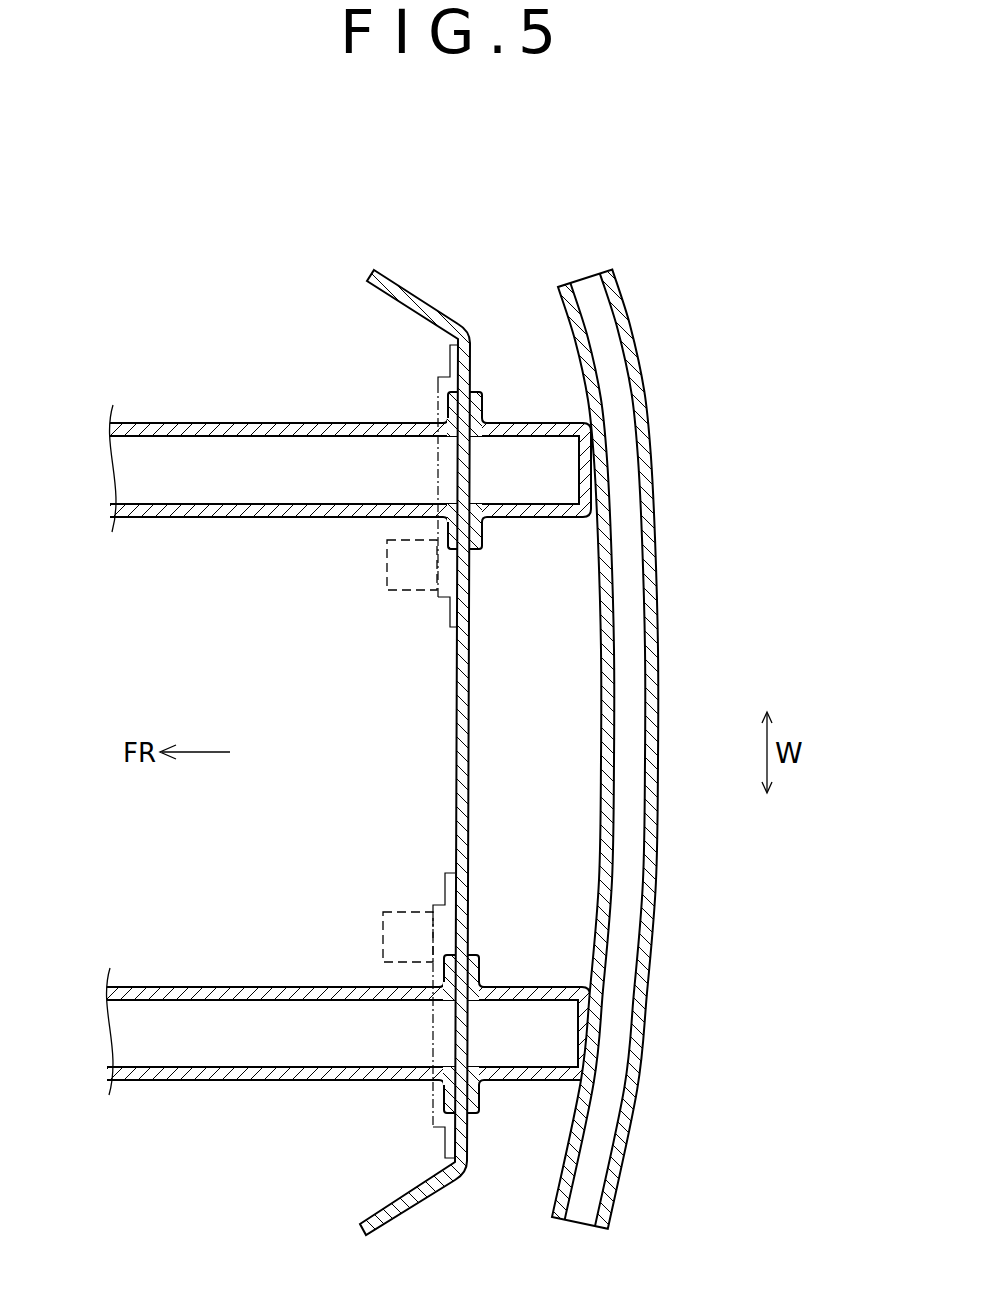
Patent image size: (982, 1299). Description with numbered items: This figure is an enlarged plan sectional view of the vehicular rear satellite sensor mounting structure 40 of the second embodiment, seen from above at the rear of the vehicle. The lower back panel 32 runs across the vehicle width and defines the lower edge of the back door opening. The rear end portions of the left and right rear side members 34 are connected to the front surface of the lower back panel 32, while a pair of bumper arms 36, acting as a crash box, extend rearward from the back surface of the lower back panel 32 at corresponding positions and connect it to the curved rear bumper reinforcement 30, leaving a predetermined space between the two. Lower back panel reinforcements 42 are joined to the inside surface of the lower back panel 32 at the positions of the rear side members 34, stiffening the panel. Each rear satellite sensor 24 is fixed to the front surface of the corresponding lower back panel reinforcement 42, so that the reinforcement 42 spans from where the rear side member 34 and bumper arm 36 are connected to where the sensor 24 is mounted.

The rear satellite sensor 24 is at (387, 562).
The rear bumper reinforcement 30 is at (660, 740).
The lower back panel 32 is at (470, 710).
The rear side member 34 is at (272, 518).
The bumper arm 36 is at (536, 518).
The vehicular rear satellite sensor mounting structure 40 is at (562, 249).
The lower back panel reinforcement 42 is at (440, 600).